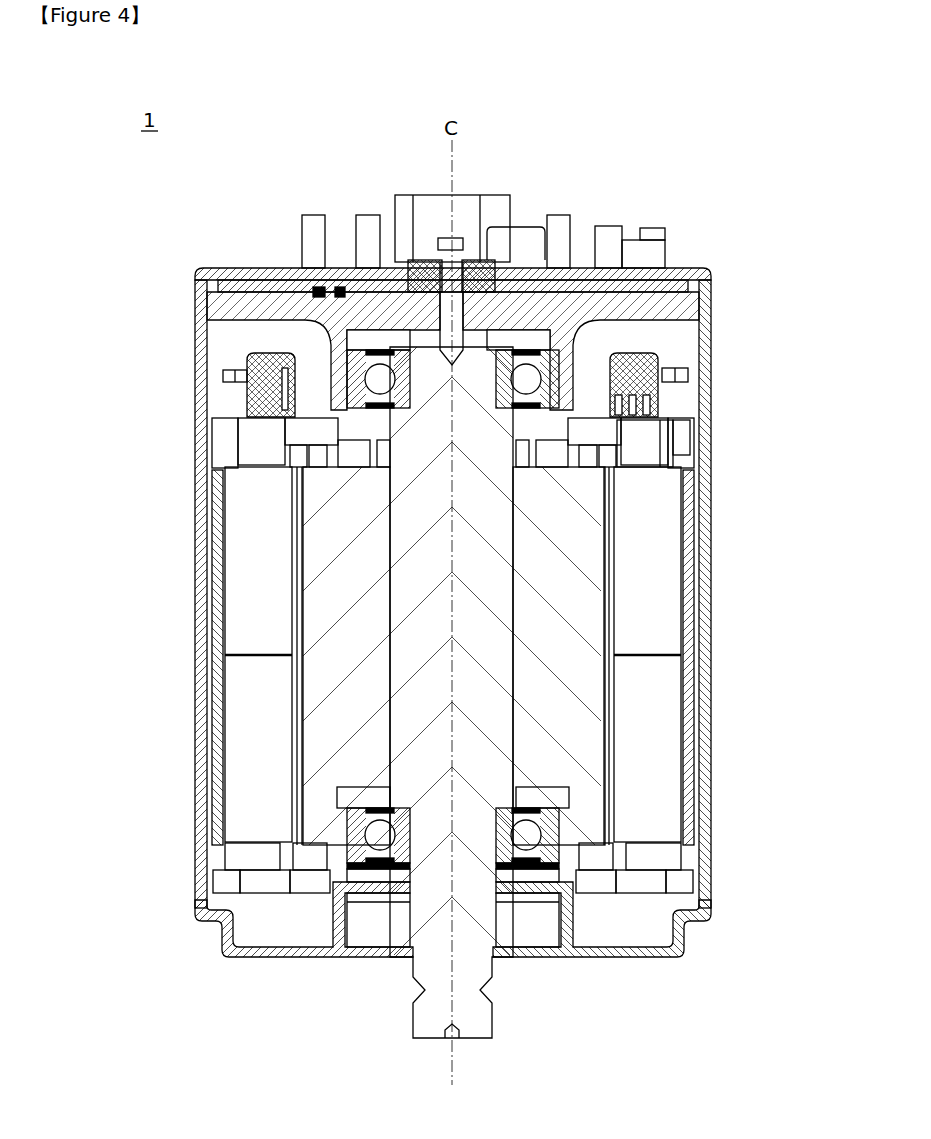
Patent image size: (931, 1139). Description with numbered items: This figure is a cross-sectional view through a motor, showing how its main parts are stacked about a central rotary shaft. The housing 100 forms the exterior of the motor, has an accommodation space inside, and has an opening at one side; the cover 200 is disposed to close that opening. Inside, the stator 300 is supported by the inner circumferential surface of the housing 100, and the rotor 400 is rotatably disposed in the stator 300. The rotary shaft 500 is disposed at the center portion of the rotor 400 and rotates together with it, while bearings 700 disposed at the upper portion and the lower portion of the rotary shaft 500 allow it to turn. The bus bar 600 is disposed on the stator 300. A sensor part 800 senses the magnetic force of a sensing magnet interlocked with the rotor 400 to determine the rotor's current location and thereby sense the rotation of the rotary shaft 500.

The housing 100 is at (705, 681).
The cover 200 is at (652, 283).
The stator 300 is at (650, 531).
The rotor 400 is at (565, 607).
The rotary shaft 500 is at (413, 992).
The bus bar 600 is at (650, 437).
The bearings 700 is at (553, 377).
The sensor part 800 is at (347, 397).